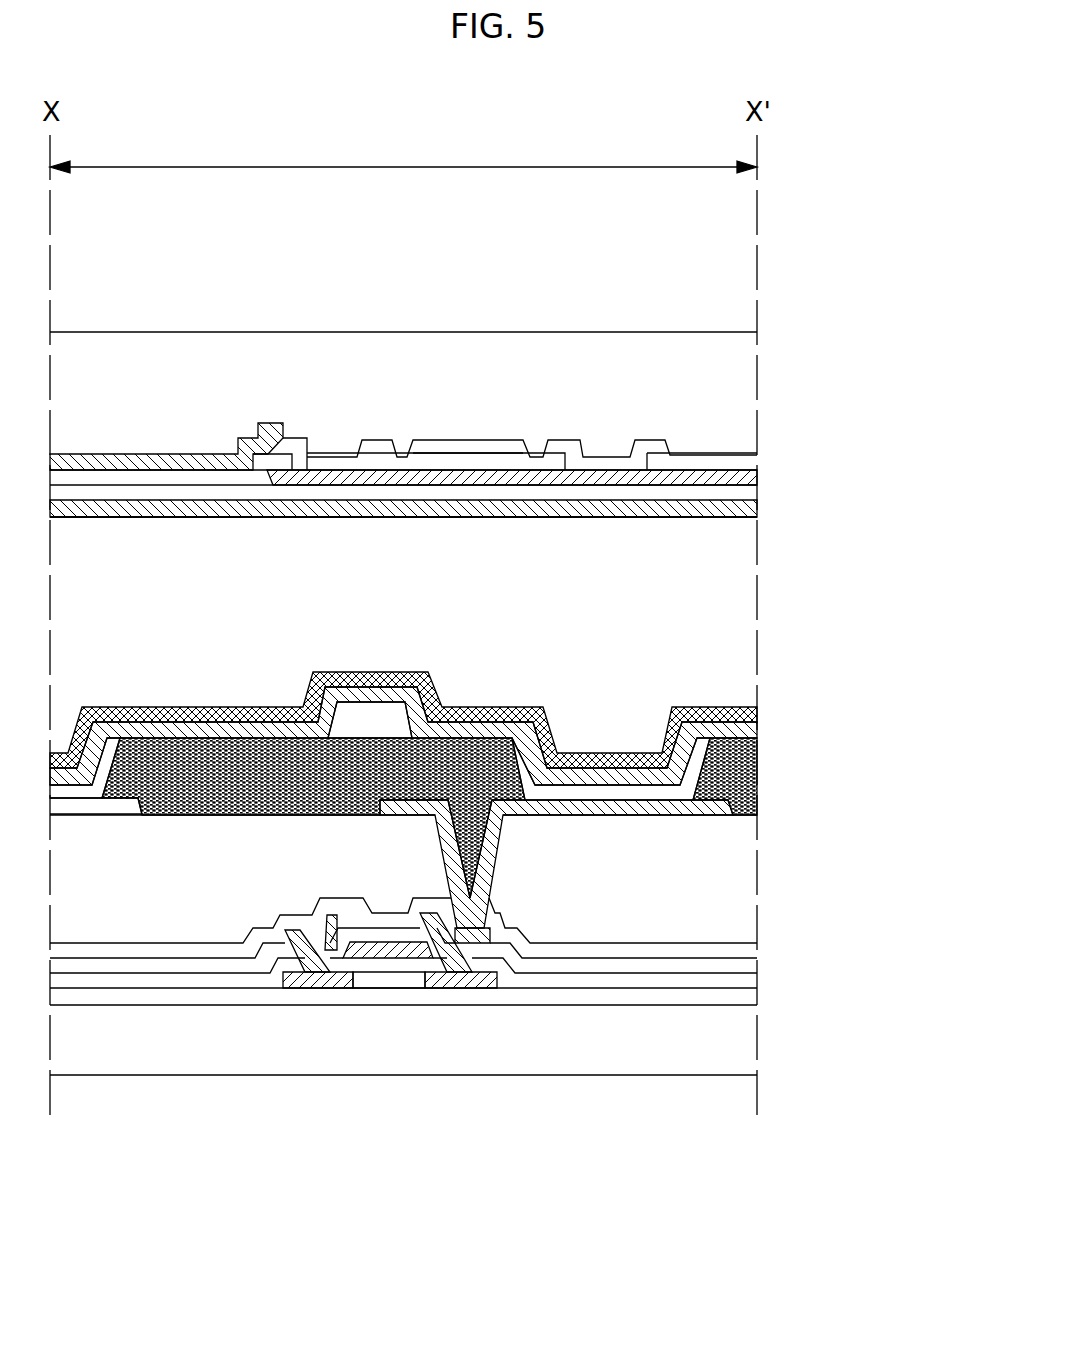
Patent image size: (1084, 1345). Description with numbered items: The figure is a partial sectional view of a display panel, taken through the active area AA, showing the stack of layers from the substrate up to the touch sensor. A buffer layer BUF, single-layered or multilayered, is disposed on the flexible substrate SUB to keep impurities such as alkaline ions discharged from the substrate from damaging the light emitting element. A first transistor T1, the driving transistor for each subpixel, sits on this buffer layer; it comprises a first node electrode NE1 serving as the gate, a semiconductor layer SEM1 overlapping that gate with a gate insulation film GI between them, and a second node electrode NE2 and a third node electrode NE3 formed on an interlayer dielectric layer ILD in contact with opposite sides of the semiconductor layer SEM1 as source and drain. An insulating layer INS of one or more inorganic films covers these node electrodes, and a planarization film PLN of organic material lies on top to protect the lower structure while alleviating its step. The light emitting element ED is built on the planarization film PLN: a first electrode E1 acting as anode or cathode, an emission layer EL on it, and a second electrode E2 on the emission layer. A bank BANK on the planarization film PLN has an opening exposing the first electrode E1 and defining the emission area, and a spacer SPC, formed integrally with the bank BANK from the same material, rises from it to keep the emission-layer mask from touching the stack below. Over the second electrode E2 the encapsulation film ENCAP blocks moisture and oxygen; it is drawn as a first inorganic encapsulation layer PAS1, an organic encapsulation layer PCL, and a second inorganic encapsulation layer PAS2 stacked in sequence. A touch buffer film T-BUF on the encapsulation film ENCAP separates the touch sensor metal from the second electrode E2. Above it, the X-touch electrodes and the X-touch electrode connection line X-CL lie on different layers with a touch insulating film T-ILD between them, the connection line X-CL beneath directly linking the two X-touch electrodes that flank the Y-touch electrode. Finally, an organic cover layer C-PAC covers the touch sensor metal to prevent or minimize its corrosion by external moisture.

The active area AA is at (403, 153).
The organic cover layer C-PAC is at (730, 370).
The touch insulating film T-ILD is at (748, 460).
The X-touch electrode connection line X-CL is at (748, 483).
The touch buffer film T-BUF is at (748, 492).
The encapsulation film ENCAP is at (505, 640).
The second inorganic encapsulation layer PAS2 is at (755, 512).
The organic encapsulation layer PCL is at (725, 603).
The first inorganic encapsulation layer PAS1 is at (757, 707).
The light emitting element ED is at (470, 807).
The second electrode E2 is at (758, 733).
The emission layer EL is at (697, 753).
The first electrode E1 is at (602, 848).
The spacer SPC is at (352, 720).
The bank BANK is at (747, 803).
The planarization film PLN is at (735, 880).
The insulating layer INS is at (748, 953).
The interlayer dielectric layer ILD is at (748, 968).
The gate insulation film GI is at (748, 978).
The buffer layer BUF is at (748, 997).
The substrate SUB is at (730, 1057).
The first transistor T1 is at (385, 1065).
The third node electrode NE3 is at (315, 983).
The first node electrode NE1 is at (388, 960).
The semiconductor layer SEM1 is at (408, 982).
The second node electrode NE2 is at (466, 1031).